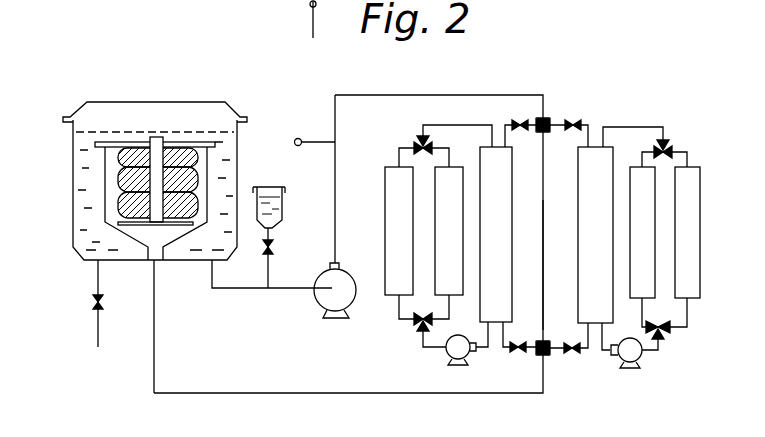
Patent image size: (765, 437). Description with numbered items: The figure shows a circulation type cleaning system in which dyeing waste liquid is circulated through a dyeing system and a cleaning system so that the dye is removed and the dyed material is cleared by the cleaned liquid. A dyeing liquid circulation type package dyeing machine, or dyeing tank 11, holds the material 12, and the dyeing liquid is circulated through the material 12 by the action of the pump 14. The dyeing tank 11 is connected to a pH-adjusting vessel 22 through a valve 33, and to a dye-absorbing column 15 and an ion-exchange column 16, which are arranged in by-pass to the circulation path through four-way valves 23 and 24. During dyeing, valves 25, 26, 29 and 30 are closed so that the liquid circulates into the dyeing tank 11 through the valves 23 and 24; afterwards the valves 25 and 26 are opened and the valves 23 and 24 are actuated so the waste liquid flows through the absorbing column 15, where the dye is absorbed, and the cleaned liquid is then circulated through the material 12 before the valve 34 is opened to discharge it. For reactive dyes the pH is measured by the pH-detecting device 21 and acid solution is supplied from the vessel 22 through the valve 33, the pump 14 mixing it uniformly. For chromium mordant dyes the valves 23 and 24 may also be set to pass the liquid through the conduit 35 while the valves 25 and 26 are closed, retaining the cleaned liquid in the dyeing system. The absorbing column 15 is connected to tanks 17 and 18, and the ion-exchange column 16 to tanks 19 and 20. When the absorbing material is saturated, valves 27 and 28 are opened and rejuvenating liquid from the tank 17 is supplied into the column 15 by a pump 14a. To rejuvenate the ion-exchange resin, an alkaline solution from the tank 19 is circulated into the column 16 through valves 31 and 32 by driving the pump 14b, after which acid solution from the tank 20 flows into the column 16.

The dyeing tank 11 is at (73, 148).
The material 12 is at (123, 185).
The pump 14 is at (318, 306).
The pump 14a is at (448, 358).
The pump 14b is at (636, 365).
The dye-absorbing column 15 is at (496, 234).
The ion-exchange column 16 is at (595, 235).
The tank 17 is at (449, 231).
The tank 18 is at (399, 231).
The tank 19 is at (644, 232).
The tank 20 is at (688, 232).
The pH-detecting device 21 is at (296, 138).
The pH-adjusting vessel 22 is at (285, 210).
The four-way valve 23 is at (545, 118).
The four-way valve 24 is at (548, 365).
The valve 25 is at (518, 120).
The valve 26 is at (516, 352).
The valve 27 is at (418, 142).
The valve 28 is at (416, 322).
The valve 29 is at (576, 120).
The valve 30 is at (576, 355).
The valve 31 is at (670, 146).
The valve 32 is at (664, 336).
The valve 33 is at (275, 249).
The valve 34 is at (103, 308).
The conduit 35 is at (543, 235).